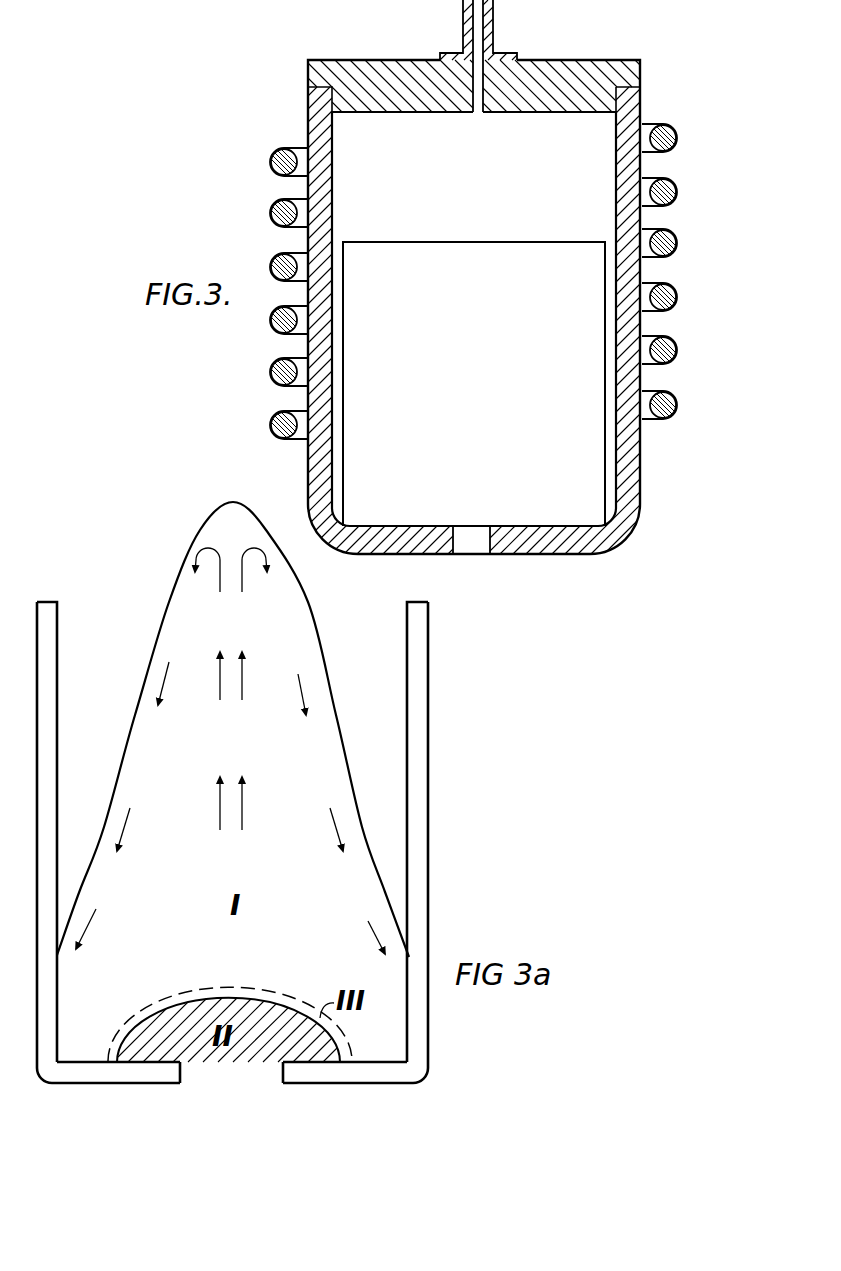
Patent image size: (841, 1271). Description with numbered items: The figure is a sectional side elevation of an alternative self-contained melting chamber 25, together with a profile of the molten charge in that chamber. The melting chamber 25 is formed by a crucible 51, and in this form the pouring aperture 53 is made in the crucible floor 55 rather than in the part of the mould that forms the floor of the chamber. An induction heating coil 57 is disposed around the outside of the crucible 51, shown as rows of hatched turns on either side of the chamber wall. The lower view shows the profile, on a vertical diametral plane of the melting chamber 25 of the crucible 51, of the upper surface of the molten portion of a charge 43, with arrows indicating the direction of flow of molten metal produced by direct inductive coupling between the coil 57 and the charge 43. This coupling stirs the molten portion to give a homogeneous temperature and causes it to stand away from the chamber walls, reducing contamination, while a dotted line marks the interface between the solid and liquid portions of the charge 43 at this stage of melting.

In FIG. 3, the melting chamber 25 is at (457, 218).
In FIG. 3A, the charge 43 is at (233, 729).
In FIG. 3, the crucible 51 is at (640, 219).
In FIG. 3A, the crucible 51 is at (428, 646).
In FIG. 3, the pouring aperture 53 is at (478, 549).
In FIG. 3A, the pouring aperture 53 is at (232, 1068).
In FIG. 3, the crucible floor 55 is at (407, 549).
In FIG. 3A, the crucible floor 55 is at (368, 1076).
In FIG. 3, the induction heating coil 57 is at (673, 309).